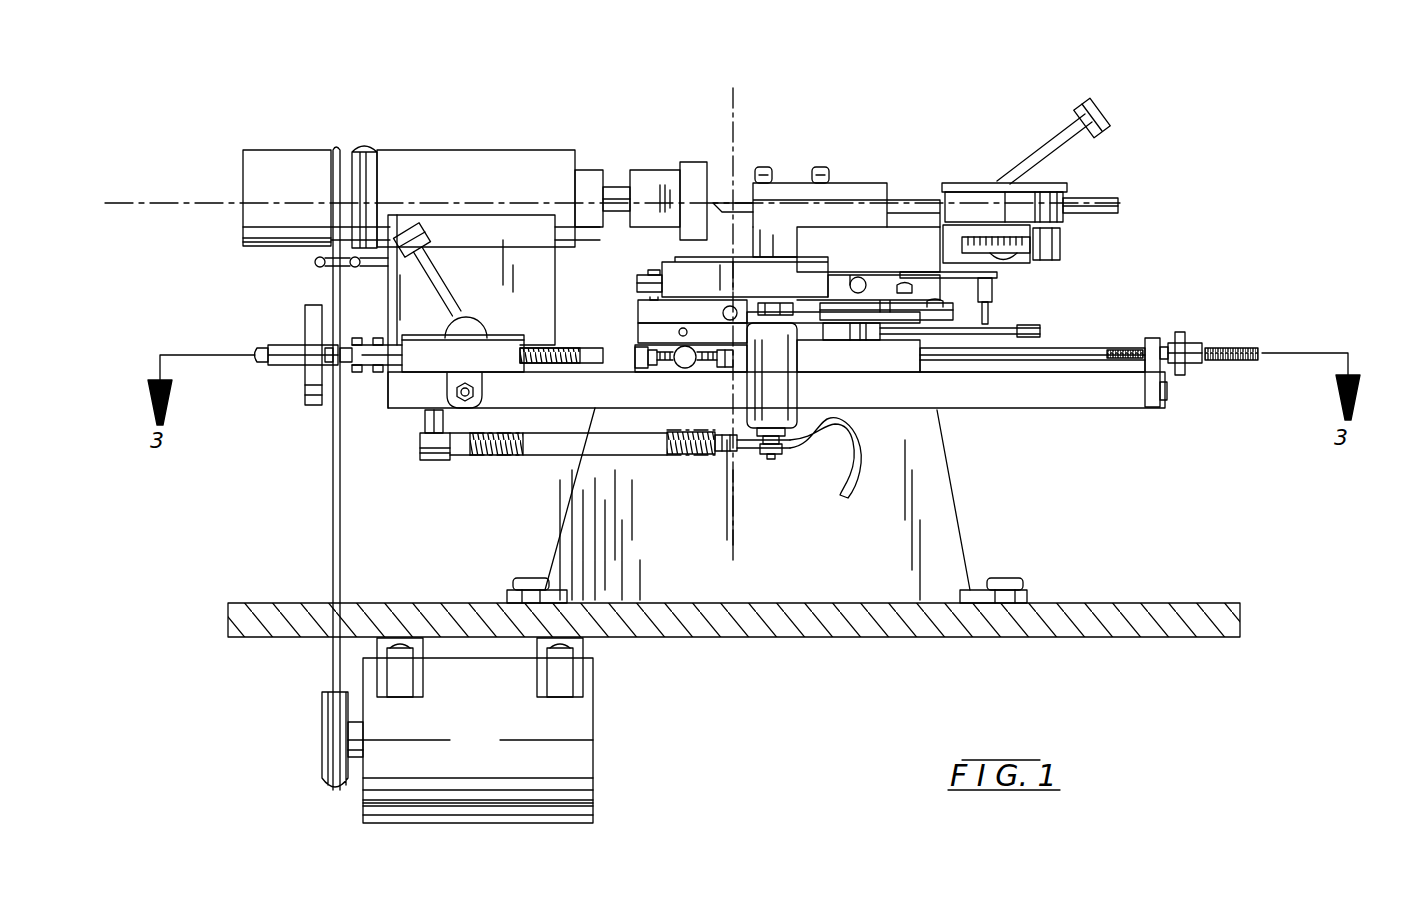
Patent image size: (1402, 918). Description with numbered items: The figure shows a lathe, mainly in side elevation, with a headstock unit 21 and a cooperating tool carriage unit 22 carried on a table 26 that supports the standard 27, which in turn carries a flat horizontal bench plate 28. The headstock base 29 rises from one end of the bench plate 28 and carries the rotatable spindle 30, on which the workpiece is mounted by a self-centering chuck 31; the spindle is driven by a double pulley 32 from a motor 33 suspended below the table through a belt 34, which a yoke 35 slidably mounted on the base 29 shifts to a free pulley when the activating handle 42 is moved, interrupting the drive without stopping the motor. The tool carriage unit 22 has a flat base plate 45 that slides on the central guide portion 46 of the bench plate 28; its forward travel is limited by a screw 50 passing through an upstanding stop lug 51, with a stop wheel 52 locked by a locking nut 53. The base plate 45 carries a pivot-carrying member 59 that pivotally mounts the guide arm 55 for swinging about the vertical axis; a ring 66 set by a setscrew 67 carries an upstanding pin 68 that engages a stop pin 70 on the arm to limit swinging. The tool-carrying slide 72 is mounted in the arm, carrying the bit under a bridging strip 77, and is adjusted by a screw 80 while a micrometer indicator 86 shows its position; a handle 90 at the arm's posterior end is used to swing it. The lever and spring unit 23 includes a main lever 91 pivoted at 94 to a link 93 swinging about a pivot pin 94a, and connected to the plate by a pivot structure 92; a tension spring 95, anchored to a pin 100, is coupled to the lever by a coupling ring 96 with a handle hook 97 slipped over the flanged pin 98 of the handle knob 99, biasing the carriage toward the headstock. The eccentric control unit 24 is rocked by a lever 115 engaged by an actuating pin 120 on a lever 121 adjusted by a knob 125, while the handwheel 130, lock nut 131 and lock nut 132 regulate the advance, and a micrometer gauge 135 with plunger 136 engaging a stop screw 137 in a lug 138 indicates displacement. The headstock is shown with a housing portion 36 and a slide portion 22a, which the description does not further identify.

The headstock unit 21 is at (423, 160).
The tool carriage unit 22 is at (846, 194).
The slide block 22a is at (730, 266).
The lever linkage and spring unit 23 is at (562, 455).
The eccentric control unit 24 is at (840, 340).
The table 26 is at (838, 640).
The standard or pedestal 27 is at (940, 492).
The bench plate 28 is at (1005, 405).
The headstock base 29 is at (540, 265).
The spindle 30 is at (617, 187).
The self-centering chuck 31 is at (660, 170).
The double pulley 32 is at (362, 152).
The motor 33 is at (488, 754).
The belt 34 is at (333, 488).
The yoke 35 is at (313, 262).
The motor housing 36 is at (491, 183).
The activating handle 42 is at (440, 285).
The base plate 45 is at (857, 365).
The central guide portion 46 is at (1045, 365).
The screw 50 is at (1095, 350).
The stop lug 51 is at (1150, 338).
The stop wheel 52 is at (1178, 375).
The locking nut 53 is at (1200, 345).
The guide arm 55 is at (849, 252).
The pivot-carrying member 59 is at (650, 336).
The ring 66 is at (650, 311).
The setscrew 67 is at (668, 240).
The upstanding pin 68 is at (655, 275).
The stop pin 70 is at (640, 283).
The tool-carrying slide 72 is at (846, 215).
The bridging strip 77 is at (797, 190).
The adjusting screw 80 is at (1061, 250).
The micrometer indicator 86 is at (1040, 200).
The handle 90 is at (1052, 143).
The main lever 91 is at (794, 375).
The pivot structure 92 is at (900, 300).
The link 93 is at (882, 300).
The pivot 94 is at (928, 305).
The pivot pin 94a is at (845, 303).
The tension spring 95 is at (495, 455).
The coupling ring 96 is at (742, 450).
The handle hook 97 is at (838, 491).
The flanged pin 98 is at (780, 460).
The handle knob 99 is at (782, 395).
The pin 100 is at (425, 428).
The rocking lever 115 is at (1035, 336).
The actuating pin 120 is at (990, 318).
The lever 121 is at (998, 273).
The knob 125 is at (865, 263).
The handwheel 130 is at (304, 400).
The lock nut 131 is at (285, 345).
The lock nut 132 is at (375, 308).
The micrometer gauge 135 is at (493, 335).
The plunger 136 is at (605, 363).
The stop screw 137 is at (723, 368).
The lug 138 is at (685, 368).